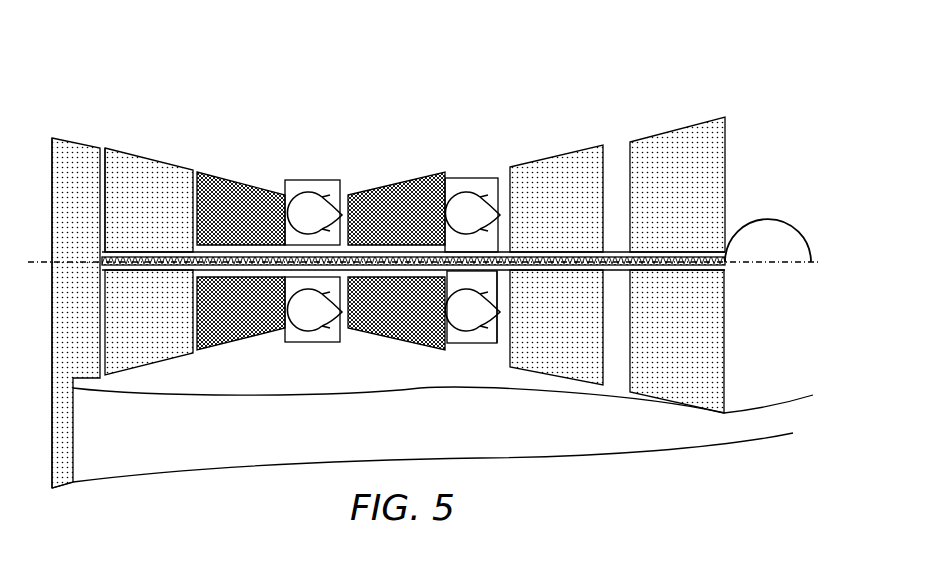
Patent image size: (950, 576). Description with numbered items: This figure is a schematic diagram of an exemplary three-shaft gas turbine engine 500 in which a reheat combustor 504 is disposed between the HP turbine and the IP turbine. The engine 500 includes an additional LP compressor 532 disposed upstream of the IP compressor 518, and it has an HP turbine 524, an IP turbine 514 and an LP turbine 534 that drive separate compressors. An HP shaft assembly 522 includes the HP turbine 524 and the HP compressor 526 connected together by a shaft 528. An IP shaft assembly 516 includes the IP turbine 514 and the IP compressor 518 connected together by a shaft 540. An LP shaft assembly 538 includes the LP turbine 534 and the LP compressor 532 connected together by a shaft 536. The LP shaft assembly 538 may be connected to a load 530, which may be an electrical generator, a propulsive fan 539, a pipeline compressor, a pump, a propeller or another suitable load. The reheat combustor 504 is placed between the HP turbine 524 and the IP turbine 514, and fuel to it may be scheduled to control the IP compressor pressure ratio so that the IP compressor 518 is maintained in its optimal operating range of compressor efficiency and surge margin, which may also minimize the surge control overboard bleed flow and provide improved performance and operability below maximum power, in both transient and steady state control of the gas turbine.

The engine 500 is at (737, 66).
The reheat combustor 504 is at (472, 345).
The IP turbine 514 is at (525, 167).
The IP shaft assembly 516 is at (104, 146).
The IP compressor 518 is at (150, 160).
The HP shaft assembly 522 is at (197, 170).
The HP turbine 524 is at (384, 185).
The HP compressor 526 is at (247, 185).
The shaft 528 is at (343, 217).
The load 530 is at (768, 218).
The LP compressor 532 is at (72, 139).
The LP turbine 534 is at (650, 140).
The shaft 536 is at (615, 257).
The LP shaft assembly 538 is at (51, 136).
The propulsive fan 539 is at (62, 485).
The shaft 540 is at (500, 274).